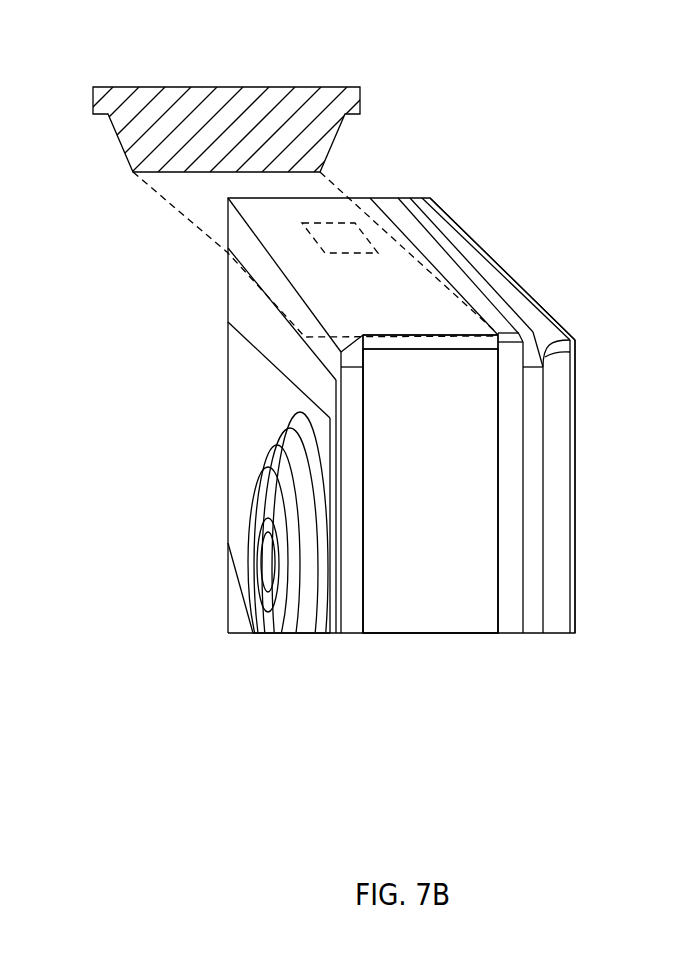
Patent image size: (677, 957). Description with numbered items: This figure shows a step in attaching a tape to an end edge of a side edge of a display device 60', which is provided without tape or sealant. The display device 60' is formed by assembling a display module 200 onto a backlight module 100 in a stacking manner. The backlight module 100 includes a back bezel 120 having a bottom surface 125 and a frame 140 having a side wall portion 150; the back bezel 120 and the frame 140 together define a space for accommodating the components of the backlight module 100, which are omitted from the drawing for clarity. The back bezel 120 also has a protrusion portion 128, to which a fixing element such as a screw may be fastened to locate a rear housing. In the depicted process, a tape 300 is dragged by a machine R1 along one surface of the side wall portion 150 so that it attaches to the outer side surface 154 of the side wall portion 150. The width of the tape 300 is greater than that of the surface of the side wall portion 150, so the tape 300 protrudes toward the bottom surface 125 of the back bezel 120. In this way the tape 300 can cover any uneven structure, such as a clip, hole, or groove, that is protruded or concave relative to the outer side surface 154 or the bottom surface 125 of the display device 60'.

The display device 60' is at (309, 323).
The machine R1 is at (317, 105).
The tape 300 is at (306, 254).
The back bezel 120 is at (280, 405).
The bottom surface 125 is at (250, 432).
The protrusion portion 128 is at (270, 634).
The side wall portion 150 is at (487, 447).
The frame 140 is at (430, 484).
The outer side surface 154 is at (477, 532).
The backlight module 100 is at (520, 640).
The display module 200 is at (575, 640).